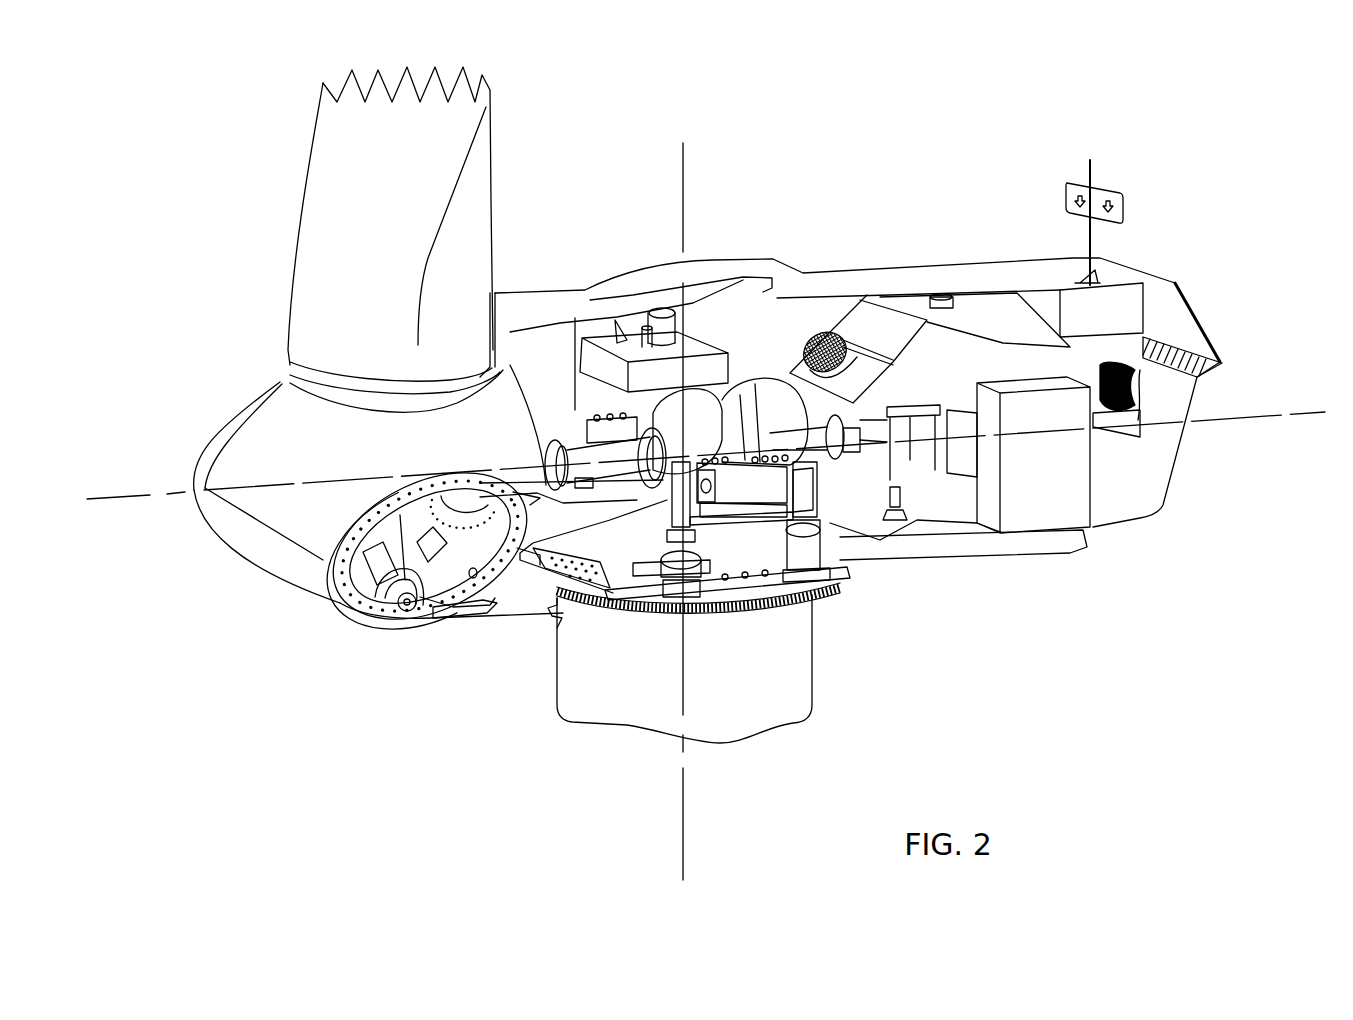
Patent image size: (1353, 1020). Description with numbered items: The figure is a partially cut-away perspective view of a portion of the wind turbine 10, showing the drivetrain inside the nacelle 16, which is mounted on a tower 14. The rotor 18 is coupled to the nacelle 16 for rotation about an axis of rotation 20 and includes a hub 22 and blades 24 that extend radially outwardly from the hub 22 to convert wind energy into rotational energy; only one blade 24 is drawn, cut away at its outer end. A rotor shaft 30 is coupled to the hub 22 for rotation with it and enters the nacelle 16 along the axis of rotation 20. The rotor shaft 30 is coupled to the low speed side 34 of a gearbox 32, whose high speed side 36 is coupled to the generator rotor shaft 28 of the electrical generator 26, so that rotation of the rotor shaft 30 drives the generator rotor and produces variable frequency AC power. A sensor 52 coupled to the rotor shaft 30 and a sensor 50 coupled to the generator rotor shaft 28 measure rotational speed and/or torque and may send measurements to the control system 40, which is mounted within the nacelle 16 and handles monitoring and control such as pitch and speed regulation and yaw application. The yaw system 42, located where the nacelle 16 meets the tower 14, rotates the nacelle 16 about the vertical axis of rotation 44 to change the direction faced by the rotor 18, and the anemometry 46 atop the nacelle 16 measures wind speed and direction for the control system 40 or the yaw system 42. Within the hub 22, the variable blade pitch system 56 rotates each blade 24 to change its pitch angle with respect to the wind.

The wind turbine 10 is at (1290, 208).
The tower 14 is at (753, 710).
The nacelle 16 is at (526, 293).
The rotor 18 is at (205, 385).
The axis of rotation 20 is at (122, 497).
The hub 22 is at (287, 513).
The blade 24 is at (333, 222).
The electrical generator 26 is at (912, 475).
The generator rotor shaft 28 is at (867, 450).
The rotor shaft 30 is at (580, 450).
The gearbox 32 is at (740, 392).
The low speed side 34 is at (668, 403).
The high speed side 36 is at (792, 395).
The control system 40 is at (1017, 398).
The yaw system 42 is at (652, 625).
The axis of rotation 44 is at (683, 177).
The anemometry 46 is at (1123, 203).
The sensor 50 is at (867, 400).
The sensor 52 is at (583, 490).
The variable blade pitch system 56 is at (385, 613).